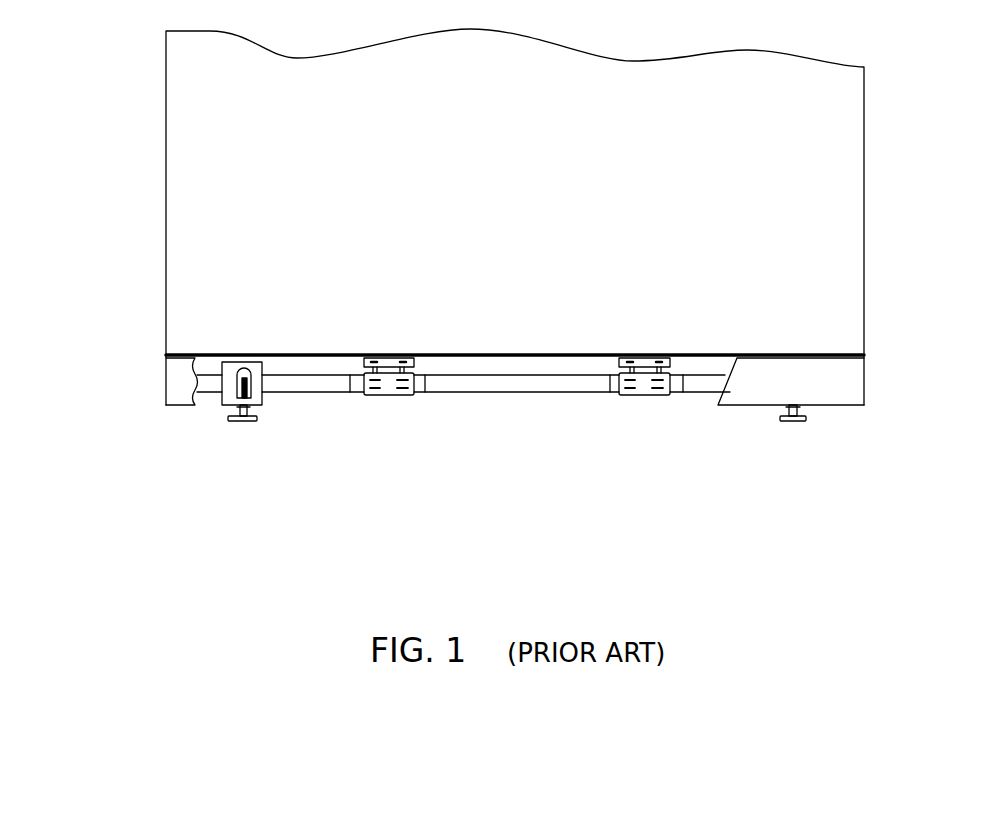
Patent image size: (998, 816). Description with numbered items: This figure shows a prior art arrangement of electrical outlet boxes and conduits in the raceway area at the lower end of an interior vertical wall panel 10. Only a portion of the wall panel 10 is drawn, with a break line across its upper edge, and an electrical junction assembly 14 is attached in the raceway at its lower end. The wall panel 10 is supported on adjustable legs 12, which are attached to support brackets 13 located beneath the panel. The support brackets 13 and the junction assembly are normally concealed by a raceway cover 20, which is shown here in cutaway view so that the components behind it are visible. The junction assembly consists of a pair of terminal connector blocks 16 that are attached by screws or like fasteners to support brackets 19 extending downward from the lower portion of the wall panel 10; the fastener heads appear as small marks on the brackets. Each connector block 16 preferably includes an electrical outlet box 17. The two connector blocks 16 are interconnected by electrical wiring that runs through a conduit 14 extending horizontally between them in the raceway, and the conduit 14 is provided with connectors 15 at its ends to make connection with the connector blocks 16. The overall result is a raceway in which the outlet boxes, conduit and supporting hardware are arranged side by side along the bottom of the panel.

The wall panel 10 is at (864, 180).
The adjustable legs 12 is at (238, 423).
The support brackets 13 is at (215, 403).
The conduit 14 is at (487, 383).
The connectors 15 is at (422, 393).
The terminal connector blocks 16 is at (385, 395).
The electrical outlet box 17 is at (367, 393).
The support brackets 19 is at (372, 357).
The raceway cover 20 is at (848, 382).